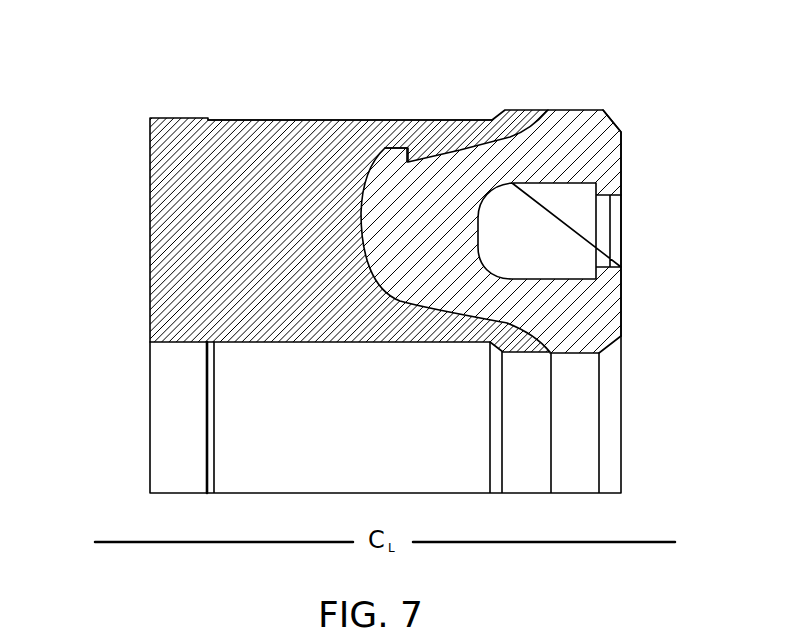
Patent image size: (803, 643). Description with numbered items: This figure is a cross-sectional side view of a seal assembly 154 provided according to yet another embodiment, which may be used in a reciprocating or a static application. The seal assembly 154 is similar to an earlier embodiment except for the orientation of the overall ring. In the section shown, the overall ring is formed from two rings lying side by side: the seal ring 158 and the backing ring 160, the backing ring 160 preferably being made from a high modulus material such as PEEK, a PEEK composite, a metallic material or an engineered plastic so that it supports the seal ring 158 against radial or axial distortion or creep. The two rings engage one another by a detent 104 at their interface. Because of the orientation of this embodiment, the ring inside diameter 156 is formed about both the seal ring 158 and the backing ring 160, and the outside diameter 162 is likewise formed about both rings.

The seal assembly 154 is at (484, 67).
The seal ring 158 is at (640, 145).
The backing ring 160 is at (138, 210).
The outside diameter 162 is at (312, 119).
The detent 104 is at (397, 147).
The ring inside diameter 156 is at (263, 343).